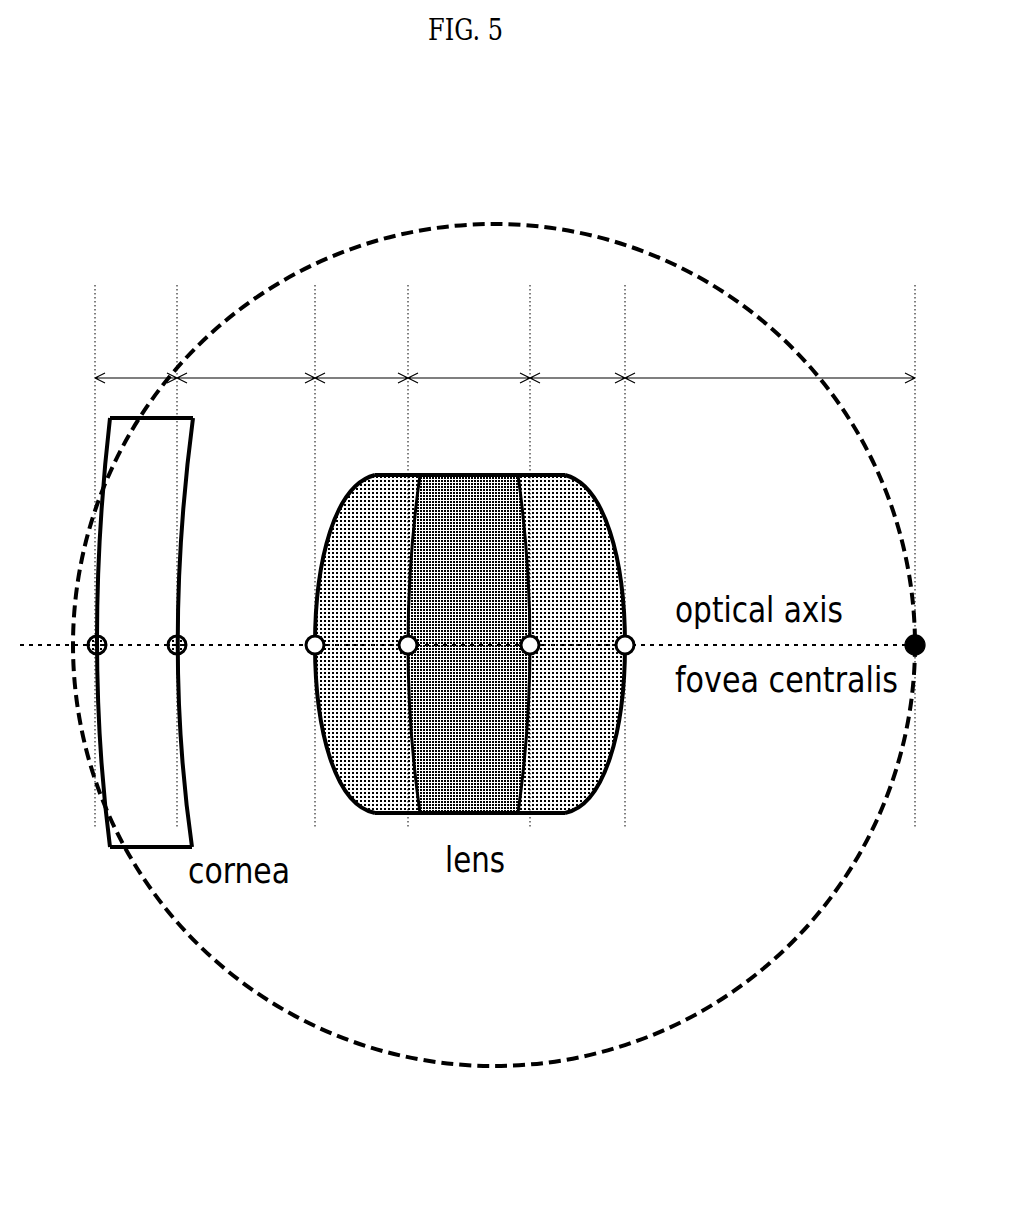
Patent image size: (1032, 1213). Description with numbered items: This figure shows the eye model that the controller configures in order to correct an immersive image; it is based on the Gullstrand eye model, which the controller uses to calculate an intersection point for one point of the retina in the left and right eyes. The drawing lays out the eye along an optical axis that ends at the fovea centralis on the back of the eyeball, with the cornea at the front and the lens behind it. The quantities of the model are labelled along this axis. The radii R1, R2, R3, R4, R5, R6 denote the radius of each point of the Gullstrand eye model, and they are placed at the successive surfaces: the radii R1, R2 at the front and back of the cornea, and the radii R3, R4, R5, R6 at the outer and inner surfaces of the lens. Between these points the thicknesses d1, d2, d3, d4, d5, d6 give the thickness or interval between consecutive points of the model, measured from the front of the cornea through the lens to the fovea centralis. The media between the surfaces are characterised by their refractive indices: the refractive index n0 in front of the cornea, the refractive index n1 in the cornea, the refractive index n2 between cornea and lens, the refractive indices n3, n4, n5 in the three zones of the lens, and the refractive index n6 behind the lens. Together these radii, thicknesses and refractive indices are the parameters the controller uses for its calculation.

The radius R1 is at (79, 632).
The radius R2 is at (191, 632).
The radius R3 is at (331, 644).
The radius R4 is at (413, 627).
The radius R5 is at (518, 627).
The radius R6 is at (612, 644).
The thickness d1 is at (136, 362).
The thickness d2 is at (246, 362).
The thickness d3 is at (361, 362).
The thickness d4 is at (469, 362).
The thickness d5 is at (577, 362).
The thickness d6 is at (770, 362).
The refractive index n0 is at (34, 739).
The refractive index n1 is at (142, 739).
The refractive index n2 is at (254, 739).
The refractive index n3 is at (367, 644).
The refractive index n4 is at (469, 644).
The refractive index n5 is at (571, 644).
The refractive index n6 is at (769, 739).